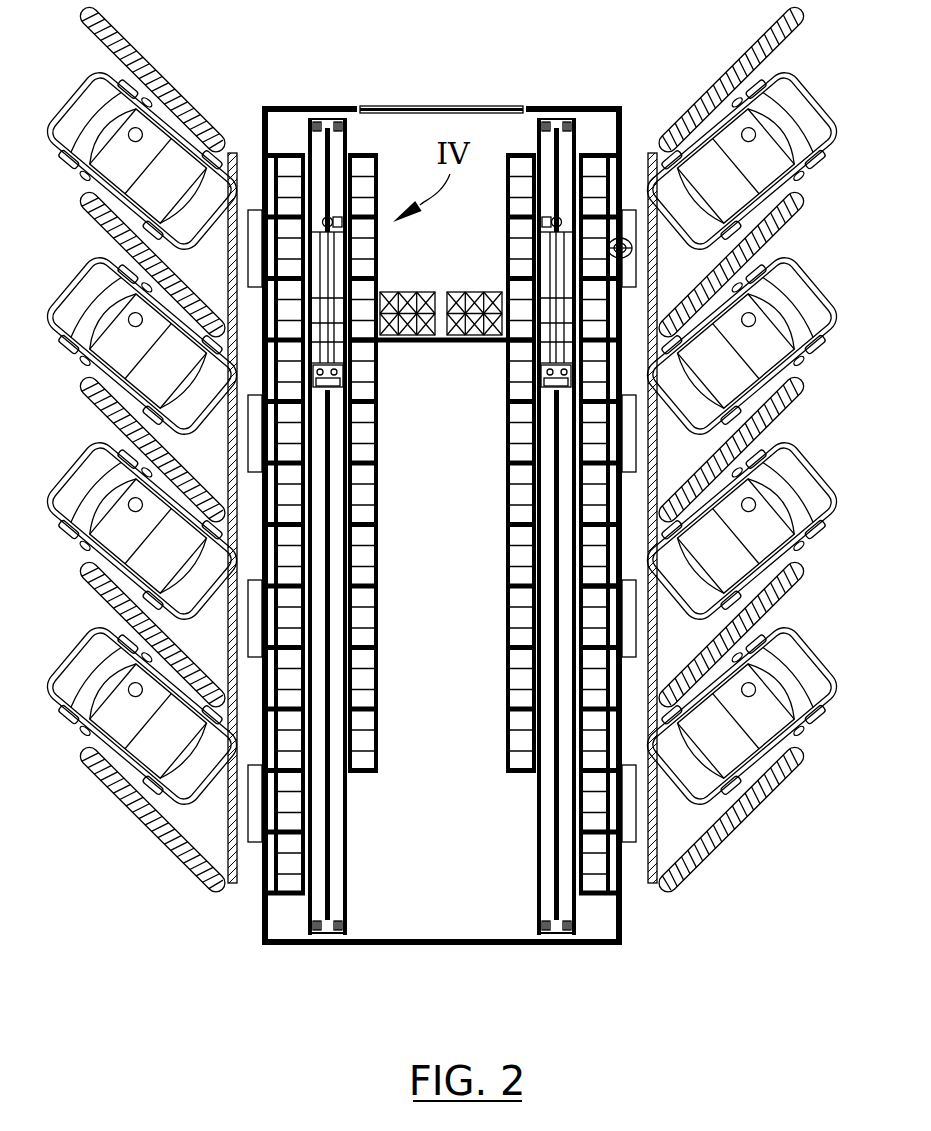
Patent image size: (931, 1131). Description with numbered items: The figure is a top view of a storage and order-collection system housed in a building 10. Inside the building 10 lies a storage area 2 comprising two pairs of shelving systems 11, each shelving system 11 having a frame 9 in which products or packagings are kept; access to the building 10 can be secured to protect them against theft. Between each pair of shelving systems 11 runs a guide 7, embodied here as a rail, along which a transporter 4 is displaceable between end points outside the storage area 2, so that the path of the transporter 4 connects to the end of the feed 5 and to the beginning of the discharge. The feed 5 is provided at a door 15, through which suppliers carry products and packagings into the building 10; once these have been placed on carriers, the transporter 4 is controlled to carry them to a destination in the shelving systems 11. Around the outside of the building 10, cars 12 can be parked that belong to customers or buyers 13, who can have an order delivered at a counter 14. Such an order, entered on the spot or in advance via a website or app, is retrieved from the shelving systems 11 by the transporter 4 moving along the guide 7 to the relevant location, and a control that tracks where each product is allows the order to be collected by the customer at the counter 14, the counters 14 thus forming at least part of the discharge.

The building 10 is at (284, 110).
The door 15 is at (515, 108).
The customers or buyers 13 is at (621, 240).
The shelving system 11 is at (315, 808).
The storage area 2 is at (400, 610).
The feed 5 is at (378, 128).
The frame 9 is at (582, 598).
The transporter 4 is at (338, 435).
The guide 7 is at (557, 905).
The counter 14 is at (262, 435).
The car 12 is at (152, 163).